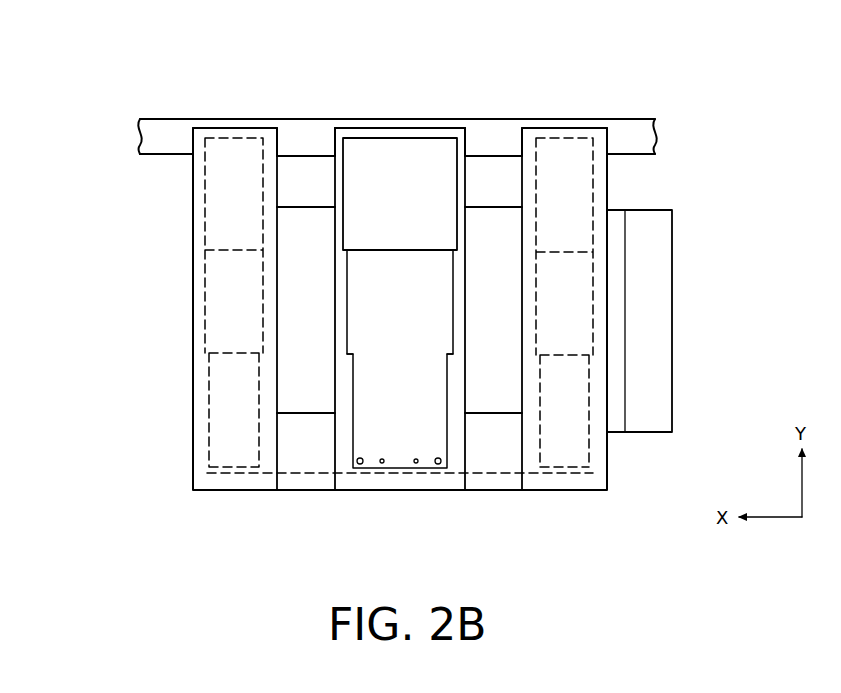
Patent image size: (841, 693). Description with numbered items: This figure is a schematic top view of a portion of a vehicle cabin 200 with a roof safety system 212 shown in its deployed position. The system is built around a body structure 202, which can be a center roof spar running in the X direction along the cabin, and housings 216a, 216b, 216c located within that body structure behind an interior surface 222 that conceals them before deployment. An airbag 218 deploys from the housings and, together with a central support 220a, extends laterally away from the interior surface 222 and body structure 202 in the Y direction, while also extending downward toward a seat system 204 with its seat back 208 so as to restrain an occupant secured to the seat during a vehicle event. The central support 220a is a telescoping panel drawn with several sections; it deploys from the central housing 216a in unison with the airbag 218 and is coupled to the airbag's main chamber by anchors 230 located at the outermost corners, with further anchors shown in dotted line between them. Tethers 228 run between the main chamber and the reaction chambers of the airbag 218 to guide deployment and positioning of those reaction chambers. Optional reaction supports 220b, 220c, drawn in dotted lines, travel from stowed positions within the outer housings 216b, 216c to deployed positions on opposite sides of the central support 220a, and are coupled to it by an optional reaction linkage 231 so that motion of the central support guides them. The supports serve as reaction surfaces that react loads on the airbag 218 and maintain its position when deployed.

The vehicle cabin 200 is at (708, 191).
The body structure 202 is at (640, 118).
The seat system 204 is at (690, 362).
The seat back 208 is at (672, 230).
The roof safety system 212 is at (87, 76).
The central housing 216a is at (400, 127).
The outer housing 216b is at (207, 127).
The outer housing 216c is at (535, 127).
The airbag 218 is at (398, 491).
The central support 220a is at (425, 191).
The reaction support 220b is at (263, 137).
The reaction support 220c is at (592, 137).
The interior surface 222 is at (163, 155).
The tethers 228 is at (303, 208).
The anchors 230 is at (358, 466).
The reaction linkage 231 is at (308, 492).